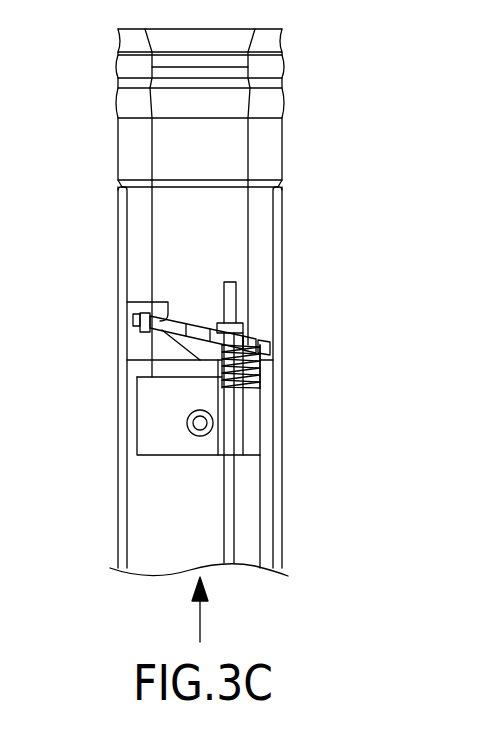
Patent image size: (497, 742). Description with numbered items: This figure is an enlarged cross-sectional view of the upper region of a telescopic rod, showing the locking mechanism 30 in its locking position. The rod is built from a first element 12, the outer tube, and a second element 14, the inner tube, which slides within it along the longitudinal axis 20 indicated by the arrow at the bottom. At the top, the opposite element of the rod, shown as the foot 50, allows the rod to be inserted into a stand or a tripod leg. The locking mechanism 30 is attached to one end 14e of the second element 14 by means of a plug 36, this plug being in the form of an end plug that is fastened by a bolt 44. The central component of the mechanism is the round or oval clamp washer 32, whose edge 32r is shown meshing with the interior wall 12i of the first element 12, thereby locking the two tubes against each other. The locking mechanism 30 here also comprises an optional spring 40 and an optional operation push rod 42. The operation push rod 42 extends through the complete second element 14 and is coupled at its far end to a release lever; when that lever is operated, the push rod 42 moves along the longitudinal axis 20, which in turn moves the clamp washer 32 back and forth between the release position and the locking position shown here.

The foot 50 is at (268, 100).
The first element 12 is at (133, 205).
The interior wall 12i is at (272, 210).
The second element 14 is at (118, 538).
The end of the second element 14e is at (165, 378).
The plug 36 is at (150, 444).
The bolt 44 is at (186, 420).
The operation push rod 42 is at (268, 290).
The clamp washer 32 is at (200, 322).
The edge of the clamp washer 32r is at (268, 346).
The locking mechanism 30 is at (272, 318).
The spring 40 is at (276, 371).
The longitudinal axis 20 is at (200, 615).